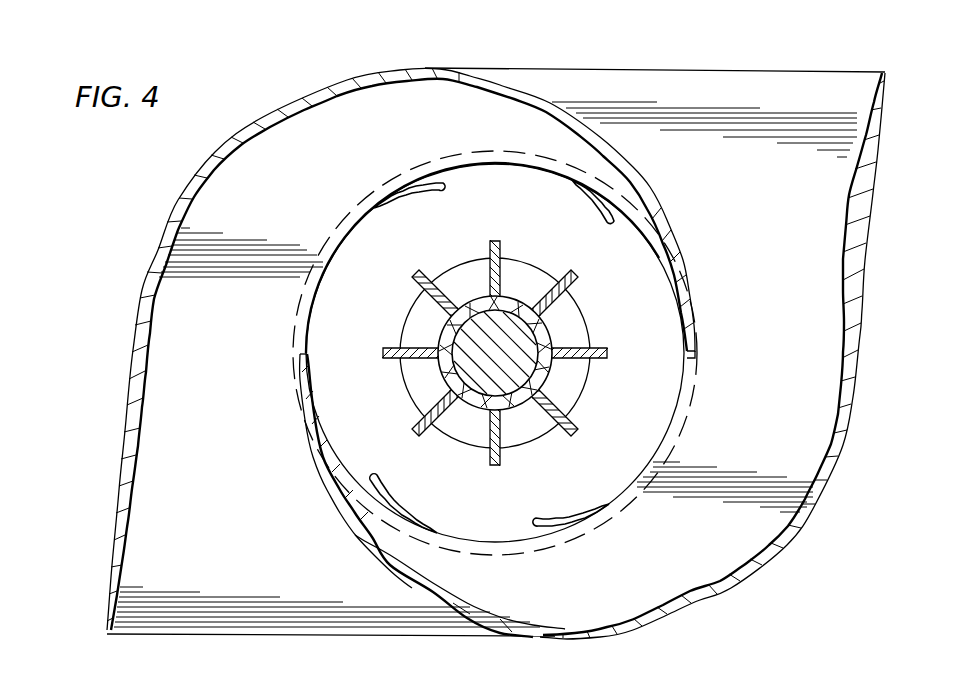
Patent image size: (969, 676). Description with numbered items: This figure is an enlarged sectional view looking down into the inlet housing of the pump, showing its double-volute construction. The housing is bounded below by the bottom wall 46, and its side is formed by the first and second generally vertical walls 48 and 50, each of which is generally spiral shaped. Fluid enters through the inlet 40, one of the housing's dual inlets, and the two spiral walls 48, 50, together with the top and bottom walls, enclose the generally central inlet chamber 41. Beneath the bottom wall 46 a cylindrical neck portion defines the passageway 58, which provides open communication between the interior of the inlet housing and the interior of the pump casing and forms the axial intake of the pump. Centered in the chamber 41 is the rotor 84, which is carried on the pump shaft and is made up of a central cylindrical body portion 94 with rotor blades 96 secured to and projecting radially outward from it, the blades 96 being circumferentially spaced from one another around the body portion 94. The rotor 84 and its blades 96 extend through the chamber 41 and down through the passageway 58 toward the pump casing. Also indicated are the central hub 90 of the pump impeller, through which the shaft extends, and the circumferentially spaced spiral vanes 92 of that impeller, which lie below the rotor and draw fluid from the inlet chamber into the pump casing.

The inlet 40 is at (707, 83).
The central inlet chamber 41 is at (500, 204).
The bottom wall 46 is at (222, 432).
The first vertical wall 48 is at (742, 580).
The second vertical wall 50 is at (297, 100).
The passageway 58 is at (648, 437).
The rotor 84 is at (522, 298).
The central hub 90 is at (420, 388).
The spiral vanes 92 is at (607, 203).
The central cylindrical body portion 94 is at (447, 330).
The rotor blades 96 is at (392, 359).